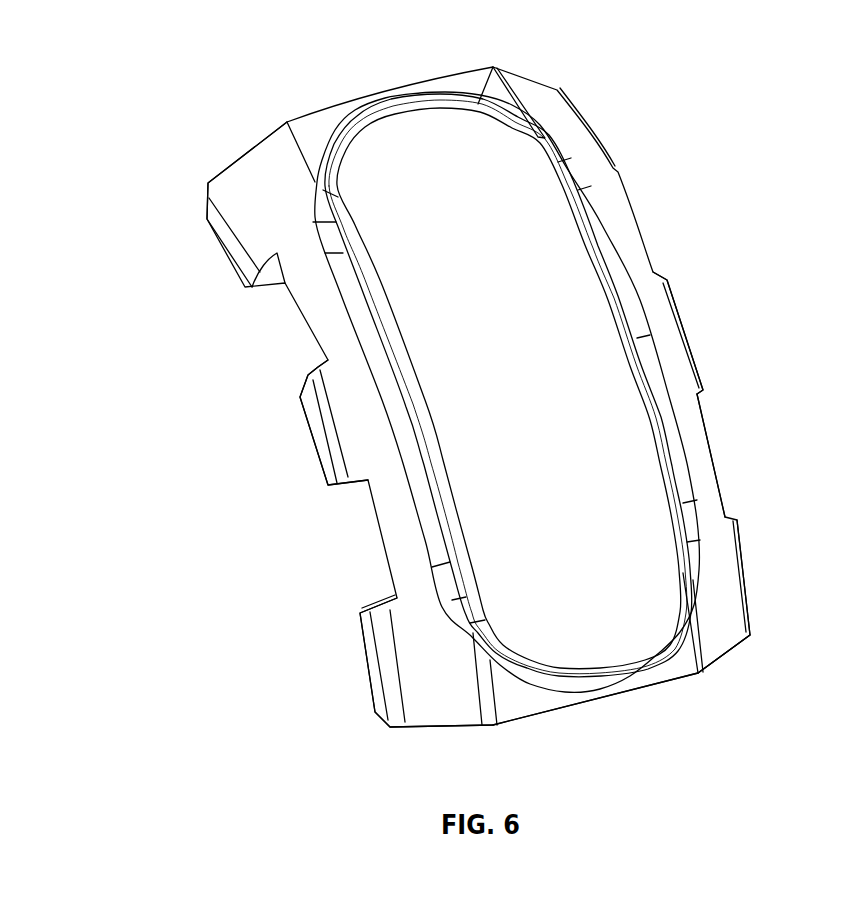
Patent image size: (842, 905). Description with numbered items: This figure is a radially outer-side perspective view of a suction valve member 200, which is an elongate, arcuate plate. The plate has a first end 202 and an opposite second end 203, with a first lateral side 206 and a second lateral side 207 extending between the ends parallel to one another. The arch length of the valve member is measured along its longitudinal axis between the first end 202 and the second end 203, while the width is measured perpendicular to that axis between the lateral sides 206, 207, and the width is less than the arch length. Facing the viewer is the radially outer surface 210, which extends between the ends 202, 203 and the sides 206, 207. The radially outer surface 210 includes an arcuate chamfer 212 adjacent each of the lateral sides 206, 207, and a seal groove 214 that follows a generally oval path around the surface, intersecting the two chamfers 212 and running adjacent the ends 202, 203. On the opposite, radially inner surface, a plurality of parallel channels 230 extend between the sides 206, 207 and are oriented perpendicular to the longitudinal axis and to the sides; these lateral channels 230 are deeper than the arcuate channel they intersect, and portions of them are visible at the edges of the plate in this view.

The suction valve member 200 is at (567, 223).
The first end 202 is at (250, 160).
The second end 203 is at (667, 680).
The first lateral side 206 is at (683, 320).
The second lateral side 207 is at (318, 402).
The radially outer surface 210 is at (583, 255).
The arcuate chamfer 212 is at (423, 652).
The seal groove 214 is at (478, 100).
The channel 230 is at (248, 289).